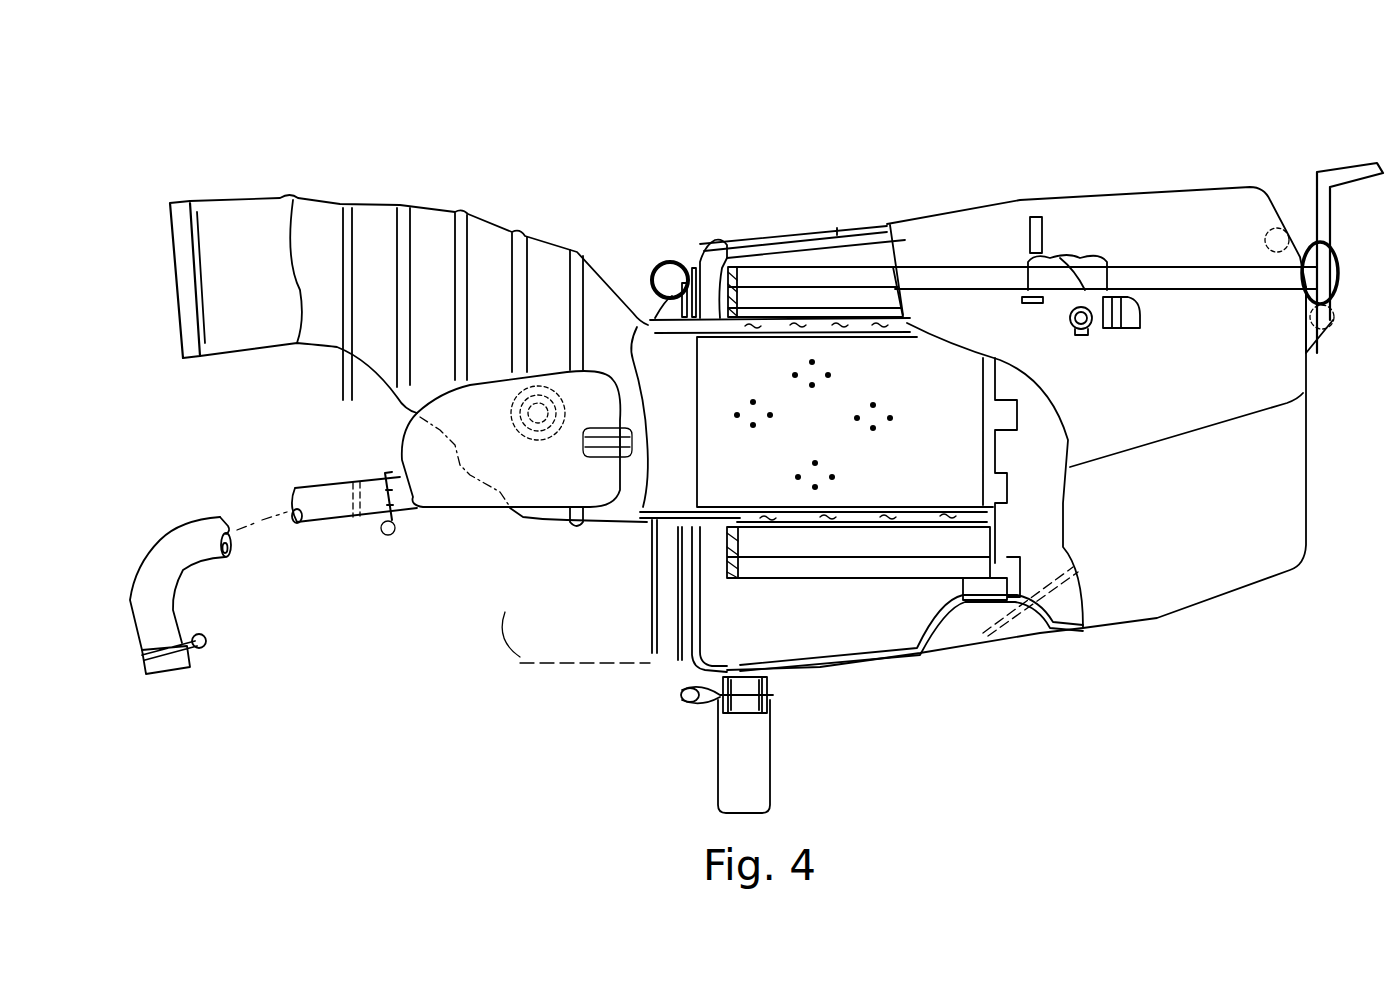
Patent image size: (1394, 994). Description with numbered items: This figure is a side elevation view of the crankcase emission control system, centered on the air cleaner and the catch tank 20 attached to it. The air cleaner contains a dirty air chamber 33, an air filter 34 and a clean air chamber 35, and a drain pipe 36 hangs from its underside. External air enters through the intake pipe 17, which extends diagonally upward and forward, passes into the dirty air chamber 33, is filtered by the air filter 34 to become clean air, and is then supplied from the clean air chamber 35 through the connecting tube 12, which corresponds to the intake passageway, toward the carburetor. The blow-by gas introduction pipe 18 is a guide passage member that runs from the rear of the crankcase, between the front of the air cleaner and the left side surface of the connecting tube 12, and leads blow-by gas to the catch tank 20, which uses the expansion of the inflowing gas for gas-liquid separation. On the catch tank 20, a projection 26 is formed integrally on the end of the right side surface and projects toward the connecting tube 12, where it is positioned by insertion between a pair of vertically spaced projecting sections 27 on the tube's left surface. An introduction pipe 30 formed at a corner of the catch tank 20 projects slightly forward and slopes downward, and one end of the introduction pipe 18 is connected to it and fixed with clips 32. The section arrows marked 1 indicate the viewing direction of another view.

The section line indicator 1 is at (538, 217).
The connecting tube 12 is at (438, 227).
The intake pipe 17 is at (588, 663).
The blow-by gas introduction pipe 18 is at (312, 488).
The catch tank 20 is at (478, 540).
The projection 26 is at (632, 446).
The projecting sections 27 is at (640, 440).
The introduction pipe 30 is at (360, 477).
The clips 32 is at (393, 540).
The dirty air chamber 33 is at (870, 648).
The air filter 34 is at (845, 517).
The clean air chamber 35 is at (955, 440).
The drain pipe 36 is at (767, 750).